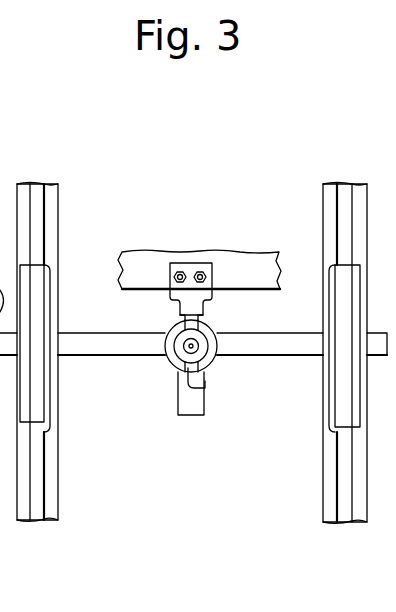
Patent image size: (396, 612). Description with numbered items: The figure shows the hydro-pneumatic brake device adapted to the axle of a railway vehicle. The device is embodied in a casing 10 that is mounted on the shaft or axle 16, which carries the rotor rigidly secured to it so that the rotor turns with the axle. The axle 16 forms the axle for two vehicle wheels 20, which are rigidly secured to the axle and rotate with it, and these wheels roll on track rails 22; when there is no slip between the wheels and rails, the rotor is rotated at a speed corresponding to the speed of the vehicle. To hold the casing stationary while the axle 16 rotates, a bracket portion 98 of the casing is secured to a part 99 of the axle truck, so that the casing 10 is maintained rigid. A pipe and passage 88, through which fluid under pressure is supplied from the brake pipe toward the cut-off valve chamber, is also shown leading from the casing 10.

The casing 10 is at (190, 416).
The shaft or axle 16 is at (263, 341).
The vehicle wheels 20 is at (48, 400).
The track rails 22 is at (37, 452).
The pipe and passage 88 is at (208, 389).
The bracket portion 98 is at (205, 288).
The part of the axle truck 99 is at (149, 257).